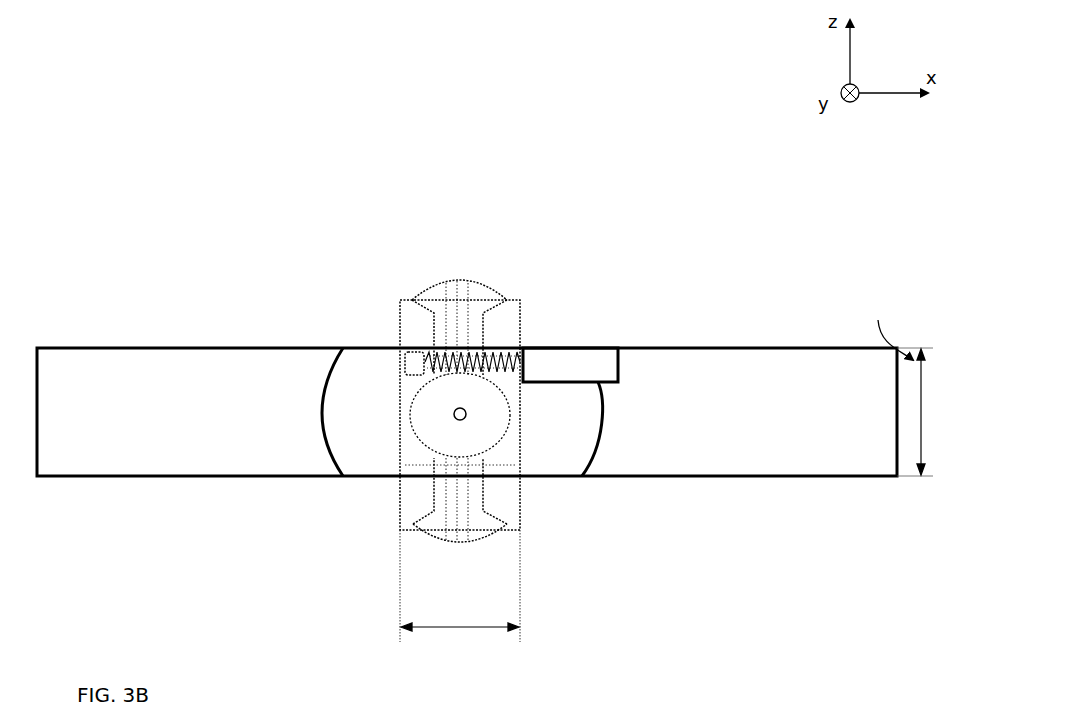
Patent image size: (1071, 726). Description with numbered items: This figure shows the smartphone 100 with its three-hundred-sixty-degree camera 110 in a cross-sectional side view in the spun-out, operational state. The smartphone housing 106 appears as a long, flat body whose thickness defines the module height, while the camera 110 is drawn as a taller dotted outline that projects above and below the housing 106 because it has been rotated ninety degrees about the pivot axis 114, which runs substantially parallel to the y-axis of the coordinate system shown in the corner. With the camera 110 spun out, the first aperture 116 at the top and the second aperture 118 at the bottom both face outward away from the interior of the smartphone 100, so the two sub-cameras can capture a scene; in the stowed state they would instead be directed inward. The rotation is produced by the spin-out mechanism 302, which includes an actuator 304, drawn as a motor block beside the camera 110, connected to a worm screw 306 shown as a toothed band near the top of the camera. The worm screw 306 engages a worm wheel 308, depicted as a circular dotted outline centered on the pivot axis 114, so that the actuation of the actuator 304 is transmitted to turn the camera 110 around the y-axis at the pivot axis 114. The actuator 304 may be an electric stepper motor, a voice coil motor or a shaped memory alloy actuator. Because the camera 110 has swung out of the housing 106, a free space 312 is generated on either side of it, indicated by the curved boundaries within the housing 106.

The smartphone 100 is at (121, 316).
The housing 106 is at (778, 436).
The 360-degree camera 110 is at (411, 271).
The pivot axis 114 is at (458, 427).
The first aperture 116 is at (480, 271).
The second aperture 118 is at (450, 548).
The spin-out mechanism 302 is at (399, 455).
The actuator 304 is at (609, 343).
The worm screw 306 is at (499, 340).
The worm wheel 308 is at (505, 442).
The free space 312 is at (368, 366).